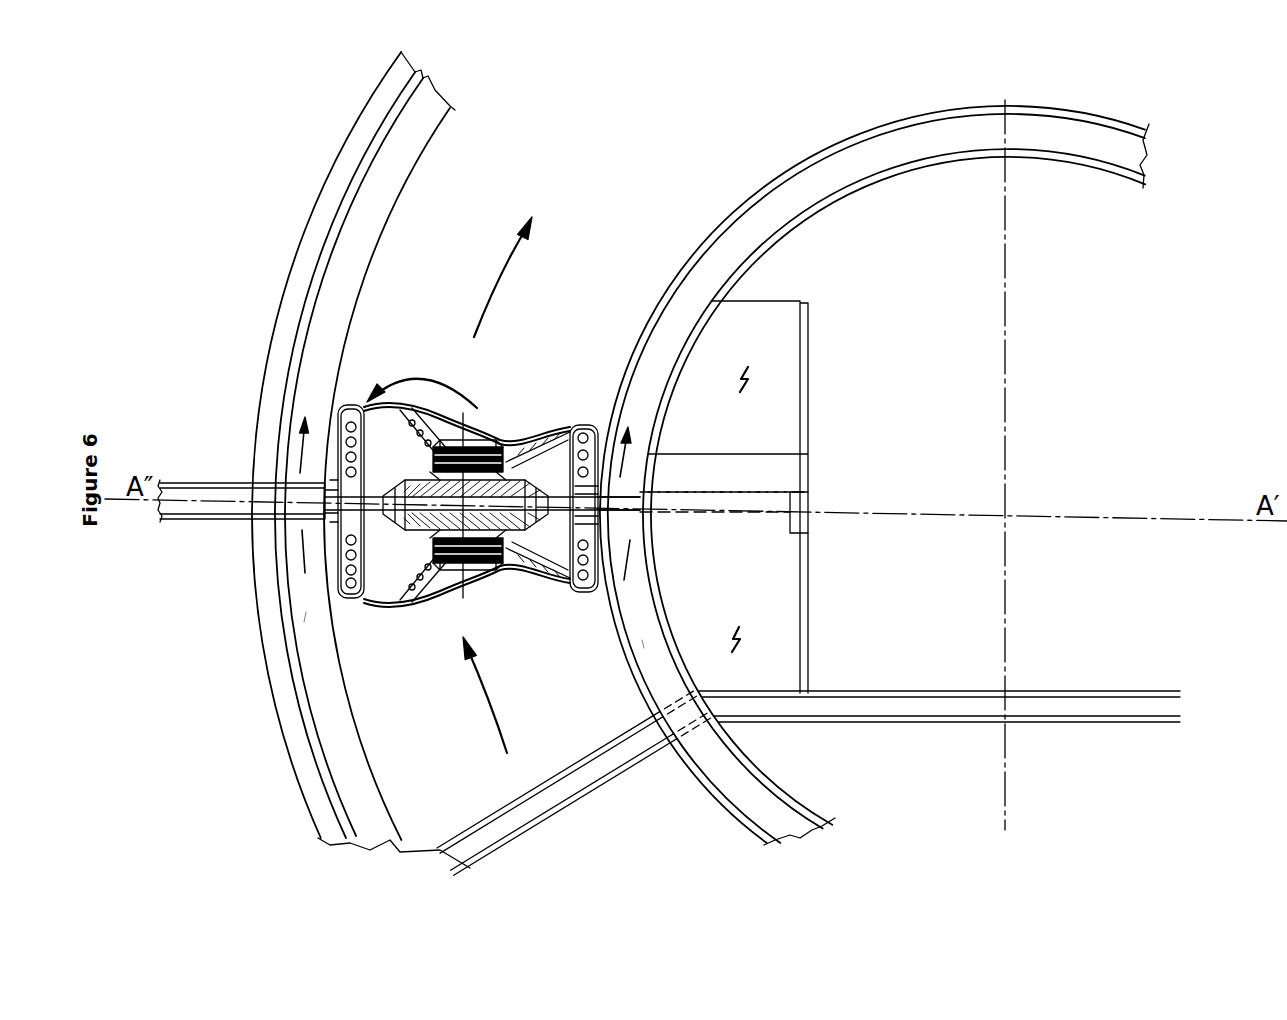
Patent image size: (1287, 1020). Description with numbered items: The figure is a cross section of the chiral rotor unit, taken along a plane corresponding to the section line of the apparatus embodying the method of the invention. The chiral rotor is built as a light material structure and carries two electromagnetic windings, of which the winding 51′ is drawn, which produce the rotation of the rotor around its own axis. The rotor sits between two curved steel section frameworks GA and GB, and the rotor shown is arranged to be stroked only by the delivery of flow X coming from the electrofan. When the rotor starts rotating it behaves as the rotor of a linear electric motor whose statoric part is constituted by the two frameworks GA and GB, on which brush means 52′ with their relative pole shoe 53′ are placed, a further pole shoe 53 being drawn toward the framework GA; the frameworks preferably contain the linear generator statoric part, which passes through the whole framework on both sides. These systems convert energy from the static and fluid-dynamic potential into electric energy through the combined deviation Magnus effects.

The pole shoe 53′ is at (293, 497).
The brush means 52′ is at (305, 617).
The electromagnetic winding 51′ is at (503, 465).
The shaft bearing (GA side) 53 is at (622, 505).
The framework GB is at (361, 460).
The framework GA is at (874, 475).
The delivery of flow X is at (575, 782).